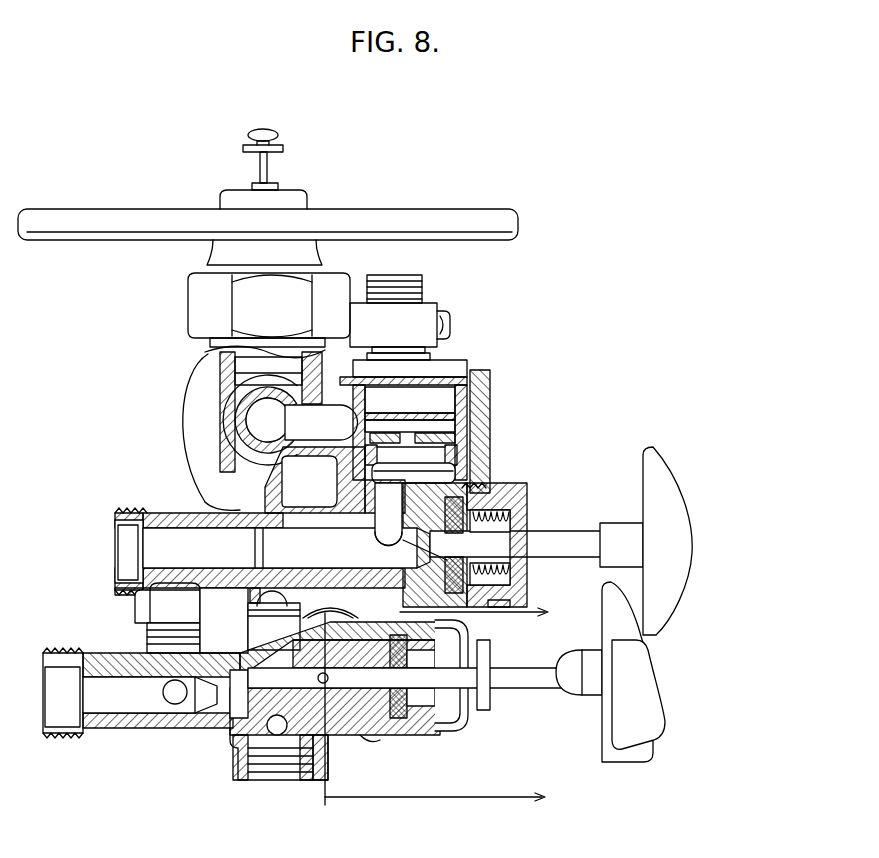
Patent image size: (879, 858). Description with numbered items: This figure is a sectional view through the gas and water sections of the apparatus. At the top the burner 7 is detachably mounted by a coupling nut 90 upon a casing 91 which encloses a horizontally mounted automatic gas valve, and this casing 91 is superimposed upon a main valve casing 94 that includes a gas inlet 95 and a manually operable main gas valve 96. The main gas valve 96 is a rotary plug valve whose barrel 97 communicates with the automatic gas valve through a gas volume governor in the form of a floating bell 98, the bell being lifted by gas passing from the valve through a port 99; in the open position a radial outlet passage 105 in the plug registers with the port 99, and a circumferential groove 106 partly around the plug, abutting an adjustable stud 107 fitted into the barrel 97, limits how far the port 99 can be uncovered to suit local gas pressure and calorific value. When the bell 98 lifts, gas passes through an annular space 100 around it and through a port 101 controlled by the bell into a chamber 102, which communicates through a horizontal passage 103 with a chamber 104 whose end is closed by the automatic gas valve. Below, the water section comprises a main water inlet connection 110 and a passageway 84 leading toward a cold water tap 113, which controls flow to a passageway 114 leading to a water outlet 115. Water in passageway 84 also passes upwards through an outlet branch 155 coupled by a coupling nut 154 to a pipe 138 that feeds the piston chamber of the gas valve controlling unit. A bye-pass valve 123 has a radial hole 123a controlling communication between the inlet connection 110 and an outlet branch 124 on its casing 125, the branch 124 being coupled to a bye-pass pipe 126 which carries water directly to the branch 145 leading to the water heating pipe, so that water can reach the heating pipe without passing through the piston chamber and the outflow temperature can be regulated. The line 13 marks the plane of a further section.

The burner 7 is at (520, 213).
The coupling nut 90 is at (210, 300).
The casing 91 is at (235, 348).
The branch 145 is at (422, 281).
The chamber 104 is at (265, 420).
The horizontal passage 103 is at (321, 422).
The chamber 102 is at (462, 424).
The port 101 is at (482, 443).
The floating bell 98 is at (452, 461).
The annular space 100 is at (455, 480).
The main valve casing 94 is at (250, 476).
The pipe 138 is at (178, 511).
The gas inlet 95 is at (128, 546).
The main gas valve 96 is at (333, 530).
The port 99 is at (389, 514).
The radial outlet passage 105 is at (389, 532).
The adjustable stud 107 is at (407, 552).
The circumferential groove 106 is at (518, 506).
The barrel 97 is at (500, 606).
The coupling nut 154 is at (165, 603).
The outlet branch 155 is at (165, 648).
The outlet branch 124 is at (262, 628).
The bye-pass pipe 126 is at (333, 614).
The main water inlet connection 110 is at (66, 712).
The passageway 84 is at (175, 700).
The passageway 114 is at (240, 746).
The water outlet 115 is at (326, 766).
The casing 125 is at (420, 738).
The cold water tap 113 is at (366, 740).
The bye-pass valve 123 is at (642, 697).
The radial hole 123a is at (346, 678).
The section line 13 is at (450, 705).